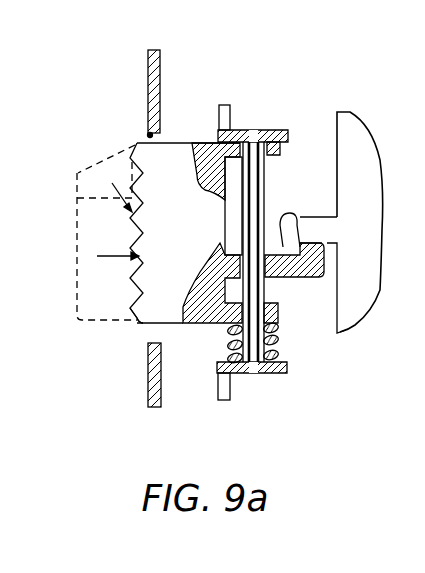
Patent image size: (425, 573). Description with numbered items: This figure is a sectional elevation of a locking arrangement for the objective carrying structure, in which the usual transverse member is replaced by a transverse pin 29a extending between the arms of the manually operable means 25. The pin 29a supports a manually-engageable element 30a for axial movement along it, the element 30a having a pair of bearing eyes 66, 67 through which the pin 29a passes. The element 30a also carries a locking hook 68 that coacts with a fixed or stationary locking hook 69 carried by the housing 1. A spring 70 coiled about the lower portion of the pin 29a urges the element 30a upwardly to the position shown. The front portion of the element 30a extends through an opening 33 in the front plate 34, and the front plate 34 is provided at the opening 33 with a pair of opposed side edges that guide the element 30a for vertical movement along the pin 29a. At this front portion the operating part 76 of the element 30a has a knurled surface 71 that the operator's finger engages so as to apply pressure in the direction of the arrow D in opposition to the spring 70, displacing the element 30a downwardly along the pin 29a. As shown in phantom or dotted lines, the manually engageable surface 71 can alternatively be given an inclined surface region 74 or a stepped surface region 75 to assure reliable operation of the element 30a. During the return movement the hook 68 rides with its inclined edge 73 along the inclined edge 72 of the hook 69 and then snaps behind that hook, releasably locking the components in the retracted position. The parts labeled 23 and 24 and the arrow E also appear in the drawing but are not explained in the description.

The housing 1 is at (340, 333).
The lower tab 23 is at (223, 399).
The upper tab 24 is at (230, 104).
The manually operable means 25 is at (268, 130).
The transverse pin 29a is at (247, 230).
The manually-engageable element 30a is at (163, 312).
The opening 33 is at (148, 135).
The front plate 34 is at (153, 60).
The bearing eye 66 is at (280, 310).
The bearing eye 67 is at (282, 145).
The locking hook 68 is at (313, 270).
The stationary locking hook 69 is at (283, 221).
The spring 70 is at (280, 353).
The knurled surface 71 is at (135, 293).
The inclined edge 72 is at (299, 217).
The inclined edge 73 is at (326, 242).
The inclined surface region 74 is at (103, 159).
The stepped surface region 75 is at (76, 189).
The operating part 76 is at (137, 320).
The arrow D is at (113, 193).
The direction E is at (109, 256).